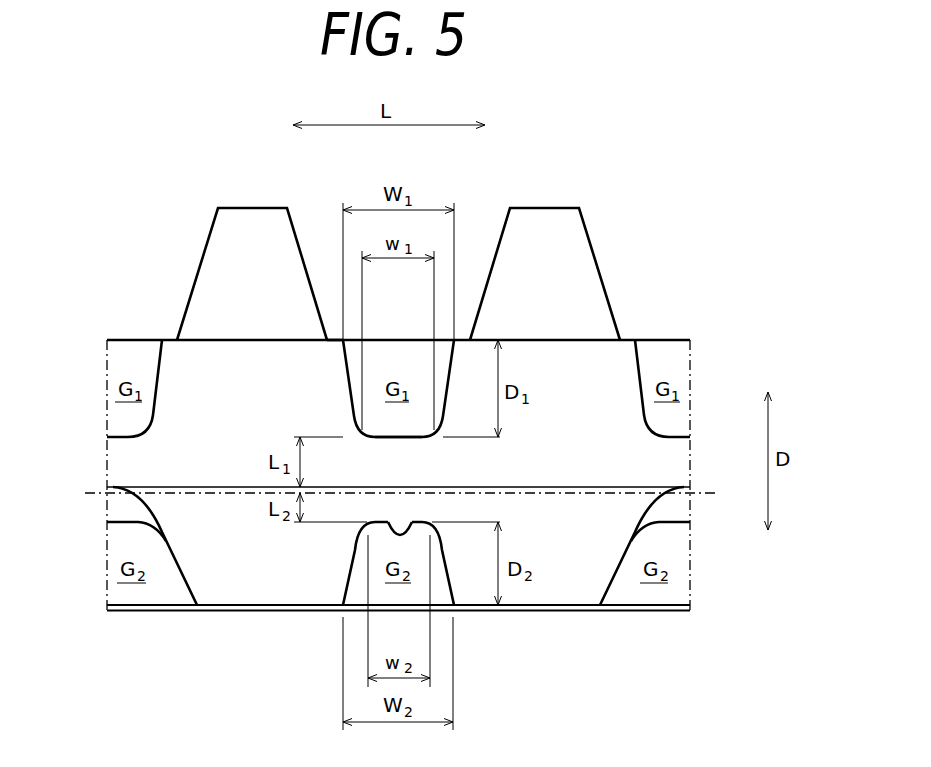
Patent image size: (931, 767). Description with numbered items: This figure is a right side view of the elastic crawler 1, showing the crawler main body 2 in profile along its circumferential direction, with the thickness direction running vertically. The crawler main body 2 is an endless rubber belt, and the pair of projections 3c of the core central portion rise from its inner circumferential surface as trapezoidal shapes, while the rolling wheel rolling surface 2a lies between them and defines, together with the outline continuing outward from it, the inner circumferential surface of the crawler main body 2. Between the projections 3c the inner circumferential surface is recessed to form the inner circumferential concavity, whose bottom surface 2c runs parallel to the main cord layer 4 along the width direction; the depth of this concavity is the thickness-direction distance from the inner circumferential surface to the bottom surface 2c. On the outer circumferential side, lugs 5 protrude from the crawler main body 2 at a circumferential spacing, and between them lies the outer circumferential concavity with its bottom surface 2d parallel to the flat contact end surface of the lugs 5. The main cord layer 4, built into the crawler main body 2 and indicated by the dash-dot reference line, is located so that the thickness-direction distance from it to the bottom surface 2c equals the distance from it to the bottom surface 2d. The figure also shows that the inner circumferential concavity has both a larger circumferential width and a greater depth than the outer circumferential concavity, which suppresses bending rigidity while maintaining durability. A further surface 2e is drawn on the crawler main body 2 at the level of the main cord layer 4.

The elastic crawler 1 is at (160, 197).
The crawler main body 2 is at (663, 340).
The rolling wheel rolling surface 2a is at (242, 339).
The bottom surface of the inner circumferential concavity 2c is at (393, 437).
The bottom surface of the outer circumferential concavity 2d is at (401, 538).
The intermediate surface 2e is at (578, 487).
The projections 3c is at (250, 226).
The main cord layer 4 is at (700, 495).
The lugs 5 is at (264, 578).